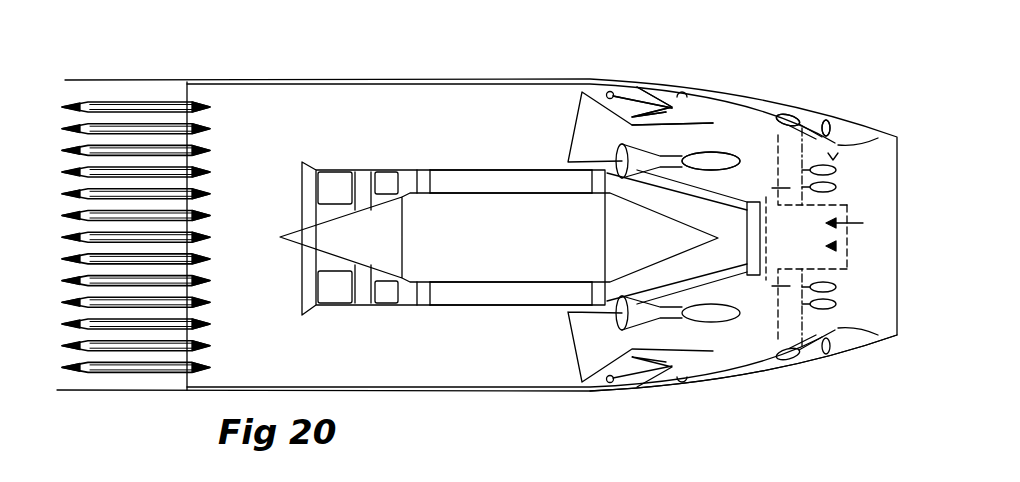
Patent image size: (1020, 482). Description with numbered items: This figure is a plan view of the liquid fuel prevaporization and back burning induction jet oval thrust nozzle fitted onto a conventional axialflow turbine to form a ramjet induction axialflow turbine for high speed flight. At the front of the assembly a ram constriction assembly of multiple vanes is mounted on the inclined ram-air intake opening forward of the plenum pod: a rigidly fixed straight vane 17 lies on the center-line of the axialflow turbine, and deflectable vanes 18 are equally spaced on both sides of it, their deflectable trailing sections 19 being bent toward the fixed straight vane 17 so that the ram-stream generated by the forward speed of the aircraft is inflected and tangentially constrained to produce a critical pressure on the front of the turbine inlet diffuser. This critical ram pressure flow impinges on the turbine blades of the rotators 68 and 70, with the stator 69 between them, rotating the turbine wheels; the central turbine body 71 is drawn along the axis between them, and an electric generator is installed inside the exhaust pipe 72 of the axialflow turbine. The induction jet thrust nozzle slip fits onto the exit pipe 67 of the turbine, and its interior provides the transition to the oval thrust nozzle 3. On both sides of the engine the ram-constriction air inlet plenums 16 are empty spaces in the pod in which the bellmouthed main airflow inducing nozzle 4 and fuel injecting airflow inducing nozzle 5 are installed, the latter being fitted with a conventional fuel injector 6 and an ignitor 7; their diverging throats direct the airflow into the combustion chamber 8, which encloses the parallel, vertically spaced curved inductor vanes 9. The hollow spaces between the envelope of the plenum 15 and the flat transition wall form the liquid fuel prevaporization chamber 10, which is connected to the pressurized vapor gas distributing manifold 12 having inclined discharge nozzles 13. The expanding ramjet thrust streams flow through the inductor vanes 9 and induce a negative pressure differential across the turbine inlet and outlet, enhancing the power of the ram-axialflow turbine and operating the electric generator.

The oval thrust nozzle 3 is at (899, 207).
The main airflow inducing nozzle 4 is at (572, 155).
The fuel injecting airflow inducing nozzle 5 is at (633, 100).
The fuel injector 6 is at (670, 100).
The ignitor 7 is at (688, 120).
The combustion chamber 8 is at (723, 134).
The inductor vane 9 is at (833, 157).
The liquid fuel prevaporization chamber 10 is at (836, 246).
The pressurized vapor gas distributing manifold 12 is at (788, 112).
The discharge nozzle 13 is at (822, 122).
The plenum 15 is at (770, 372).
The ram-constriction air inlet plenum 16 is at (453, 261).
The rigidly fixed straight vane 17 is at (200, 238).
The deflectable vane 18 is at (78, 98).
The deflectable trailing section of vane 19 is at (93, 100).
The exit pipe 67 is at (748, 222).
The rotator 68 is at (338, 180).
The stator 69 is at (361, 178).
The rotator 70 is at (389, 180).
The missile 71 is at (462, 207).
The exhaust pipe 72 is at (517, 180).